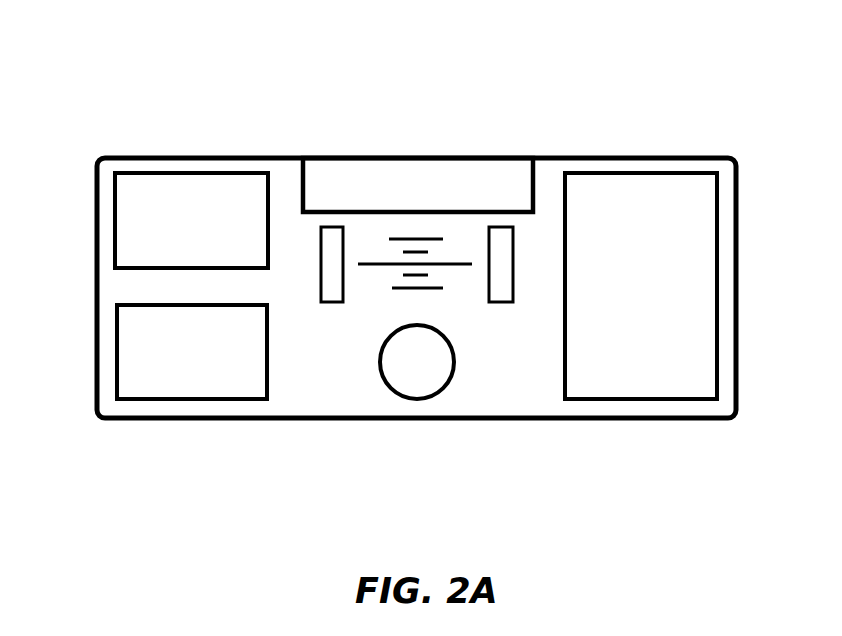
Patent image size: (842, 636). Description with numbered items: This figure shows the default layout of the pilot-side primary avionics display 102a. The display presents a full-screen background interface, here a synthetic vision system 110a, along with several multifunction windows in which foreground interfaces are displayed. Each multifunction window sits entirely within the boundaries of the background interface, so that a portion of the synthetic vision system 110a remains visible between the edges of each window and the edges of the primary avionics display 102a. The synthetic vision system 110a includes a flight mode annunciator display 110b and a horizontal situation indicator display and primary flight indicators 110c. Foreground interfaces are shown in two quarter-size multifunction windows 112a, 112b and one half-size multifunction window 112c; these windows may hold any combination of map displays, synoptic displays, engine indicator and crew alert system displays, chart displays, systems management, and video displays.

The pilot-side primary avionics display 102a is at (389, 242).
The synthetic vision system 110a is at (285, 177).
The flight mode annunciator display 110b is at (440, 175).
The horizontal situation indicator display and primary flight indicators 110c is at (417, 400).
The quarter-size multifunction window 112a is at (141, 192).
The quarter-size multifunction window 112b is at (190, 400).
The half-size multifunction window 112c is at (609, 212).